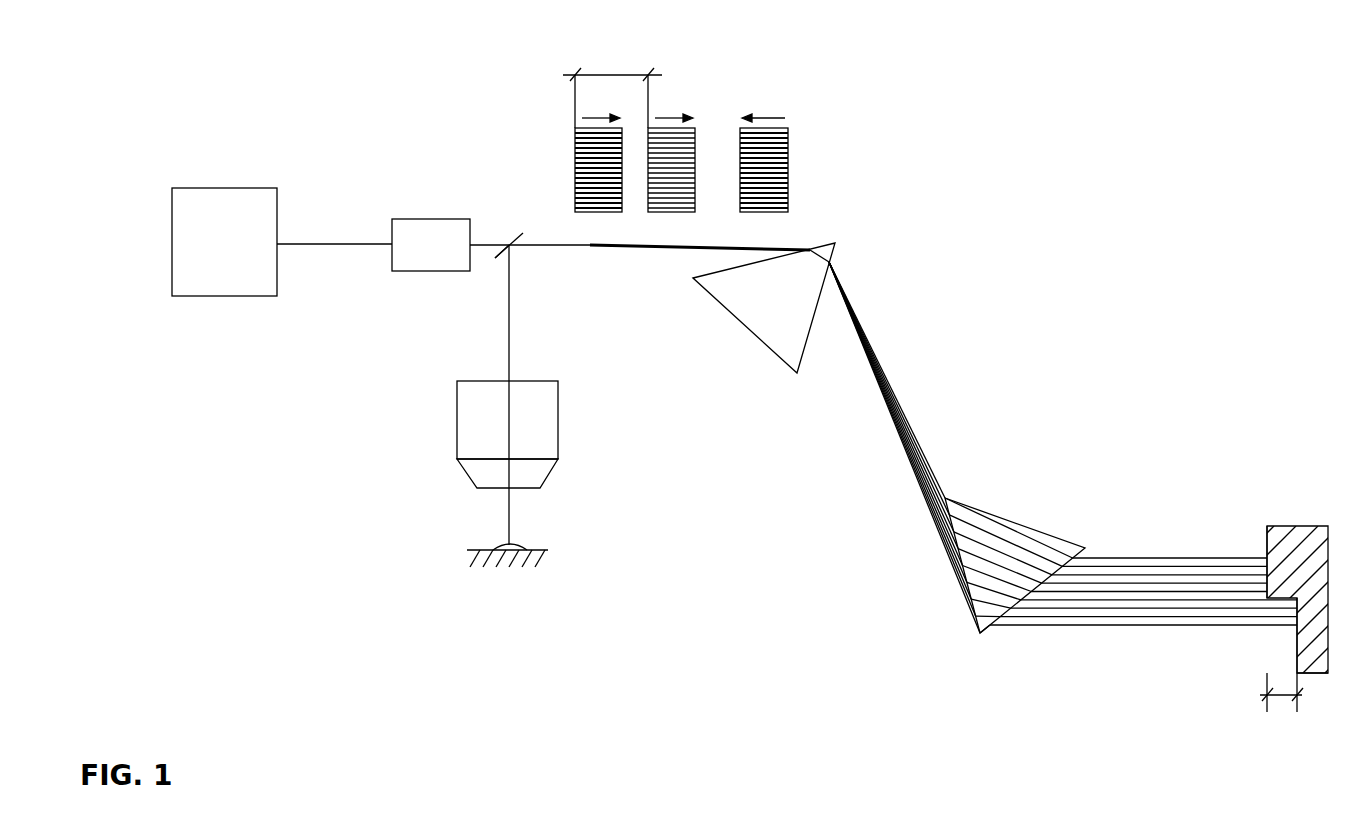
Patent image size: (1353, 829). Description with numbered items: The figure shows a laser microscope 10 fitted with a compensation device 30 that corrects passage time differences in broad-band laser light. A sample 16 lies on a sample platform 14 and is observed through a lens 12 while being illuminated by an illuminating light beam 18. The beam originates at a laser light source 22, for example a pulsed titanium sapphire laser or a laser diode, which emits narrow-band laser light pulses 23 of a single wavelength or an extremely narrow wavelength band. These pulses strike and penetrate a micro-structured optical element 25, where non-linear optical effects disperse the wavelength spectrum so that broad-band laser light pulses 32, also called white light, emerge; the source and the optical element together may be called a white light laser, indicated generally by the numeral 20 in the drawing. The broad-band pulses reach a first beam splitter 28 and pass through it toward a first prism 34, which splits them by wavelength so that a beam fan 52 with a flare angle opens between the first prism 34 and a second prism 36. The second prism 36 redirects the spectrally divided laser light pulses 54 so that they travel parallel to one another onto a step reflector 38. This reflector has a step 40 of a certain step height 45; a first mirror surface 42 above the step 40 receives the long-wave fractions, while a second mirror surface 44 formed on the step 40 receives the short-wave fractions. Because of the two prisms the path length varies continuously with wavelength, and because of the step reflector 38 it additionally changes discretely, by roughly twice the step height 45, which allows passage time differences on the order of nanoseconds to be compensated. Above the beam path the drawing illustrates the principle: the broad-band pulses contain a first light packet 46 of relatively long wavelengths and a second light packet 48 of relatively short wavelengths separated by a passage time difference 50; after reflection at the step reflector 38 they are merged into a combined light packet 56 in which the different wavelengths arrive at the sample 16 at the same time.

The laser microscope 10 is at (360, 424).
The lens 12 is at (560, 422).
The sample platform 14 is at (540, 549).
The sample 16 is at (500, 545).
The illuminating light beam 18 is at (510, 301).
The measuring device 20 is at (400, 132).
The laser light source 22 is at (215, 188).
The laser light pulses 23 is at (332, 250).
The optical element 25 is at (423, 219).
The first beam splitter 28 is at (503, 258).
The compensation device 30 is at (992, 294).
The broad-band laser light pulses 32 is at (486, 243).
The first prism 34 is at (728, 313).
The second prism 36 is at (977, 632).
The step reflector 38 is at (1290, 526).
The step 40 is at (1297, 640).
The first mirror surface 42 is at (1258, 554).
The second mirror surface 44 is at (1290, 667).
The step height 45 is at (1277, 697).
The first light packet 46 is at (575, 143).
The second light packet 48 is at (695, 145).
The passage time difference 50 is at (606, 75).
The beam fan 52 is at (917, 480).
The spectrally divided laser light pulses 54 is at (1160, 557).
The combined light packet 56 is at (788, 155).